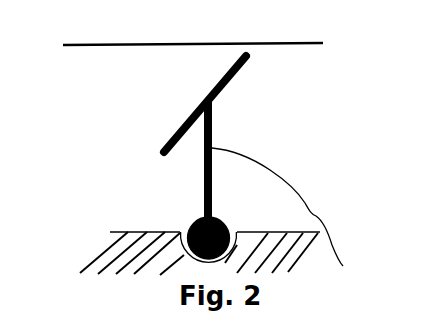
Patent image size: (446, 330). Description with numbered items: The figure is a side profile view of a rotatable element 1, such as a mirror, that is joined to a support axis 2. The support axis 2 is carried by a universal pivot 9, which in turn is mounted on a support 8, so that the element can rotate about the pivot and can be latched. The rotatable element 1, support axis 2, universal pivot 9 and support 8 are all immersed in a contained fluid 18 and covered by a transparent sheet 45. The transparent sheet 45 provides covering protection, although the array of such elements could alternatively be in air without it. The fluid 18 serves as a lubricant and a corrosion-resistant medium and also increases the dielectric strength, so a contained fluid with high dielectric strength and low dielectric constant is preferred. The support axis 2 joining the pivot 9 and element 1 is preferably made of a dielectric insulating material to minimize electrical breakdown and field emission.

The transparent sheet 45 is at (131, 48).
The rotatable element 1 is at (202, 102).
The contained fluid 18 is at (298, 138).
The support axis 2 is at (284, 214).
The universal pivot 9 is at (228, 224).
The support 8 is at (293, 252).